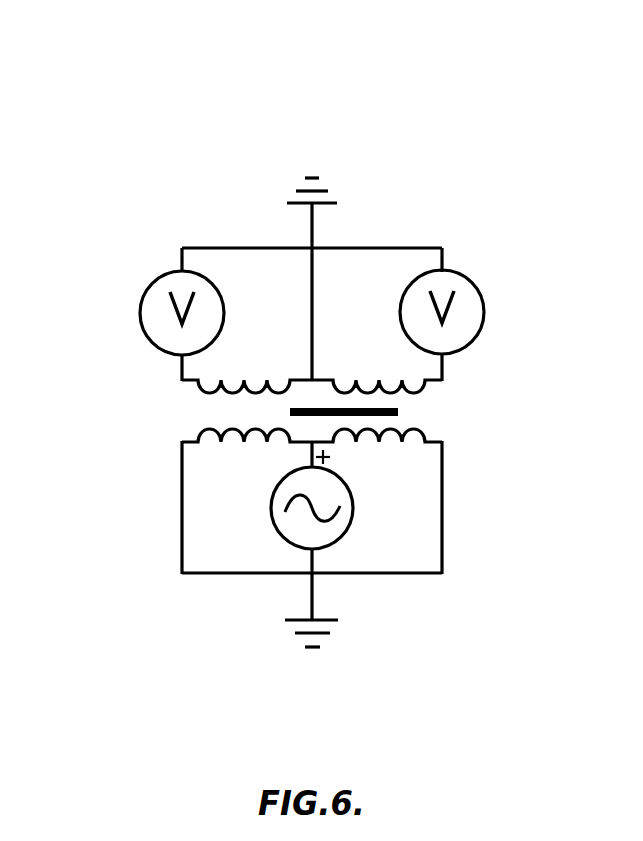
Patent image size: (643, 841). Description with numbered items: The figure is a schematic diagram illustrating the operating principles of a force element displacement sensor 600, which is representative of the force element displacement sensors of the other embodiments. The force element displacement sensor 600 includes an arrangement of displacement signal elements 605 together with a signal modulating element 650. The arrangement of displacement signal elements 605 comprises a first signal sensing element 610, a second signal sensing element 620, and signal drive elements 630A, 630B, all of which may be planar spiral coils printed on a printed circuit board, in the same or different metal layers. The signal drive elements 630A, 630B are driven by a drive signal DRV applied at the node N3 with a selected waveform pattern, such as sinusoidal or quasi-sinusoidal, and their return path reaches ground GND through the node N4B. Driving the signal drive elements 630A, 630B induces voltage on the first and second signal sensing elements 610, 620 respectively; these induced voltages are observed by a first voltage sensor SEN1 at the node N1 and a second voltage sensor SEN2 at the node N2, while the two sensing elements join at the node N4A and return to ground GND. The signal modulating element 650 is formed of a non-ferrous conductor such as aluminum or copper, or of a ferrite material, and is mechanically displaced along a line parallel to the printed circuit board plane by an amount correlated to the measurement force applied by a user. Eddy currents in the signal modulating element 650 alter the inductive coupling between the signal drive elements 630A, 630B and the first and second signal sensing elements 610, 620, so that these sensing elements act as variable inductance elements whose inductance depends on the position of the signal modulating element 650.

The force element displacement sensor 600 is at (341, 343).
The arrangement of displacement signal elements 605 is at (315, 408).
The first signal sensing element 610 is at (221, 374).
The second signal sensing element 620 is at (401, 376).
The signal drive element 630A is at (270, 446).
The signal drive element 630B is at (354, 447).
The signal modulating element 650 is at (398, 411).
The first voltage sensor SEN1 is at (139, 303).
The second voltage sensor SEN2 is at (484, 305).
The drive signal DRV is at (276, 528).
The node N1 is at (154, 370).
The node N2 is at (469, 367).
The node N3 is at (263, 482).
The node N4A is at (281, 344).
The node N4B is at (353, 594).
The ground GND is at (308, 409).